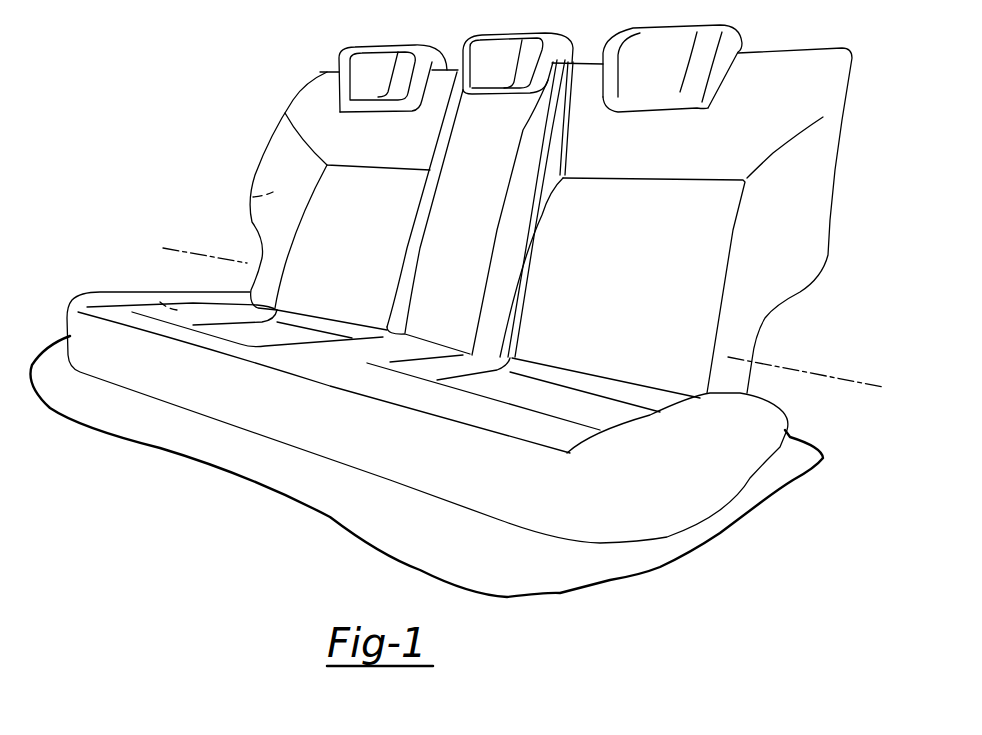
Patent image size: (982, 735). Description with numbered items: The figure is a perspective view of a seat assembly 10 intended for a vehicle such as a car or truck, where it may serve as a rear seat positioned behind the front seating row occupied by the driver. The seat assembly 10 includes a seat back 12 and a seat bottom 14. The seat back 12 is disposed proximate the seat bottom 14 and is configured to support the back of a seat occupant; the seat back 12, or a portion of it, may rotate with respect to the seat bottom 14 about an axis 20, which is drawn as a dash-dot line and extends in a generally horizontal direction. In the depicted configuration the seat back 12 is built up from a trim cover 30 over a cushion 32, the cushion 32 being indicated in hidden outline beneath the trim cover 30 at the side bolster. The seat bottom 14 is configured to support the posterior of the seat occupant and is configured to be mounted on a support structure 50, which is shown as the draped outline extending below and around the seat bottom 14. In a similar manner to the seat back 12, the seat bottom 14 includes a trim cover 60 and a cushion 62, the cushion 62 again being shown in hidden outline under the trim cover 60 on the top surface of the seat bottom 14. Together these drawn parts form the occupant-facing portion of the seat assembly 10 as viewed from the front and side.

The seat assembly 10 is at (237, 126).
The seat back 12 is at (817, 86).
The seat bottom 14 is at (730, 480).
The axis 20 is at (820, 377).
The trim cover 30 is at (287, 170).
The cushion 32 is at (243, 197).
The support structure 50 is at (650, 556).
The trim cover 60 is at (217, 305).
The cushion 62 is at (153, 290).